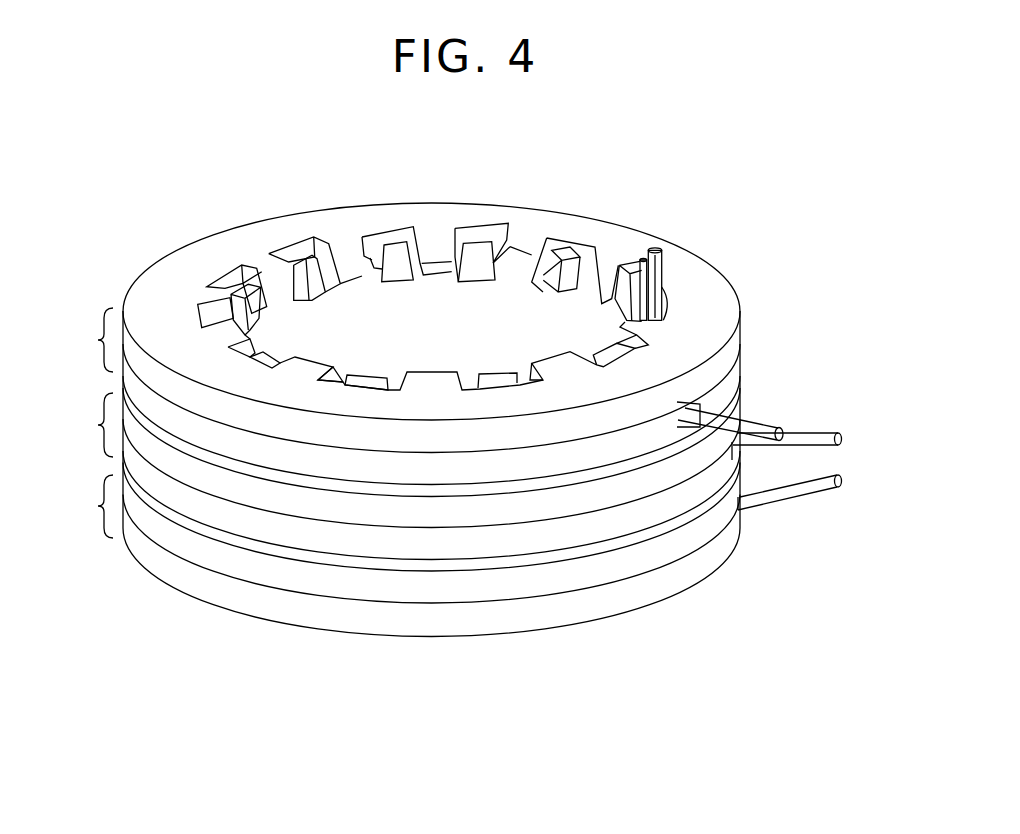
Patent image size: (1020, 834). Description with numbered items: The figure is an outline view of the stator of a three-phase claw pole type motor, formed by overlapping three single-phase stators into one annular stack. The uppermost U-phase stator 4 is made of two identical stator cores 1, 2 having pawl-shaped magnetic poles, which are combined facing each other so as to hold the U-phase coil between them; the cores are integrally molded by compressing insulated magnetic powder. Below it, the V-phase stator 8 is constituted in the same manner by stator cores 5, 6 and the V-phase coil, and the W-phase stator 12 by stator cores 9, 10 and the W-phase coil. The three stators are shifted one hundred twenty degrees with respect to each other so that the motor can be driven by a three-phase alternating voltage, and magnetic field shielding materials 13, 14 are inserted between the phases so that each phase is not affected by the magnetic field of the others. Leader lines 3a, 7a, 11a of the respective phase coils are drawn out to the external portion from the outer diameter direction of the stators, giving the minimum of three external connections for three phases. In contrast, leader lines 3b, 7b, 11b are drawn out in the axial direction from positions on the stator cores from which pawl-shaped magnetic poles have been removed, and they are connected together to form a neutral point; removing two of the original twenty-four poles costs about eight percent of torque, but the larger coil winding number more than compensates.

The stator core 1 is at (313, 430).
The stator core 2 is at (357, 466).
The magnetic field shielding material 13 is at (392, 491).
The stator core 5 is at (445, 513).
The stator core 6 is at (472, 544).
The magnetic field shielding material 14 is at (503, 563).
The stator core 9 is at (542, 584).
The stator core 10 is at (592, 608).
The U-phase stator 4 is at (97, 340).
The V-phase stator 8 is at (97, 425).
The W-phase stator 12 is at (90, 506).
The leader line 3a is at (753, 427).
The leader line 3b is at (661, 269).
The leader line 7a is at (808, 437).
The leader line 7b is at (655, 250).
The leader line 11a is at (810, 487).
The leader line 11b is at (643, 259).